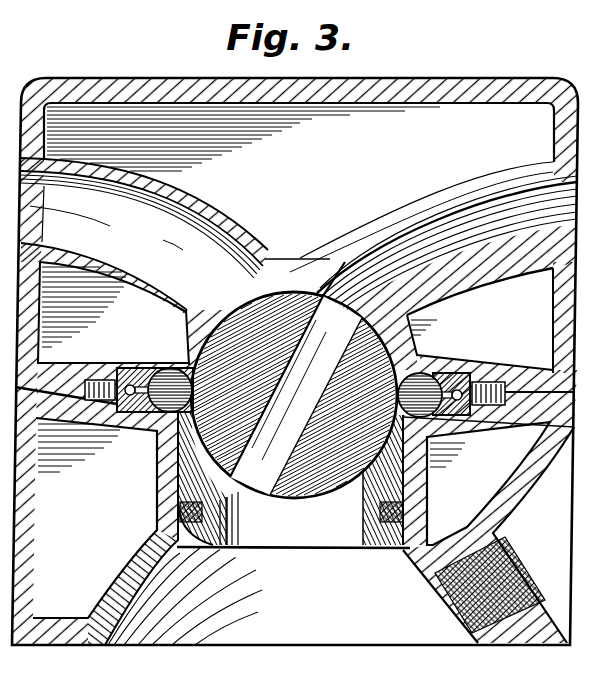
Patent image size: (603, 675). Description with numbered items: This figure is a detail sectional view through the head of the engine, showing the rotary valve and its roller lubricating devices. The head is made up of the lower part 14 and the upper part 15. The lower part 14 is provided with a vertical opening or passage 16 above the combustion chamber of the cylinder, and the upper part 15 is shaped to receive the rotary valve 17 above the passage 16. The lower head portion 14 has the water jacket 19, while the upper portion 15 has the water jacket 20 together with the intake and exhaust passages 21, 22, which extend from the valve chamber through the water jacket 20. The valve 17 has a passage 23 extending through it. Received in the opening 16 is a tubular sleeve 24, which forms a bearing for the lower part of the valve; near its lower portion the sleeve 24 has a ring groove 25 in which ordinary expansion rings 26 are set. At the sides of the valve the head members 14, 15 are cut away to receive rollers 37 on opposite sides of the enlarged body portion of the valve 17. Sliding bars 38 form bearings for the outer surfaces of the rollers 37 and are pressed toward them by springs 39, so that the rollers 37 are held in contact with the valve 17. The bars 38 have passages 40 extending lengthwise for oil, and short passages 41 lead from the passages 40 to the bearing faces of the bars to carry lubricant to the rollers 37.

The lower part of the head 14 is at (33, 482).
The upper part of the head 15 is at (448, 101).
The vertical opening or passage 16 is at (423, 362).
The rotary valve 17 is at (245, 317).
The water jacket 19 is at (490, 499).
The water jacket 20 is at (243, 139).
The intake passage 21 is at (175, 263).
The exhaust passage 22 is at (455, 237).
The passage 23 is at (294, 380).
The tubular sleeve 24 is at (240, 498).
The ring groove 25 is at (385, 505).
The expansion rings 26 is at (180, 508).
The rollers 37 is at (165, 378).
The sliding bars 38 is at (460, 376).
The springs 39 is at (88, 401).
The passages 40 is at (478, 380).
The short passages 41 is at (136, 398).